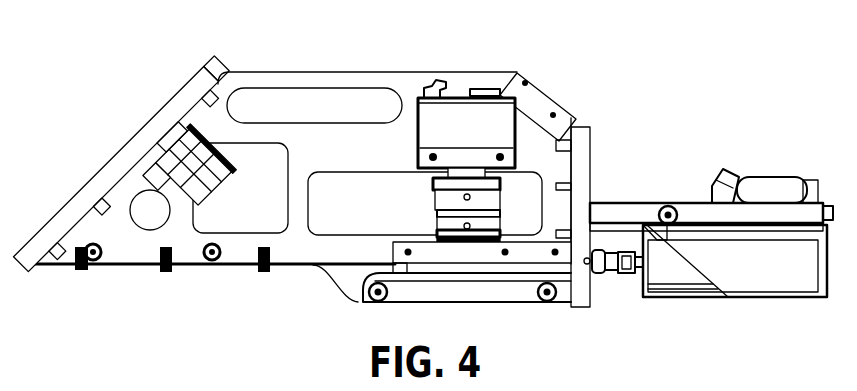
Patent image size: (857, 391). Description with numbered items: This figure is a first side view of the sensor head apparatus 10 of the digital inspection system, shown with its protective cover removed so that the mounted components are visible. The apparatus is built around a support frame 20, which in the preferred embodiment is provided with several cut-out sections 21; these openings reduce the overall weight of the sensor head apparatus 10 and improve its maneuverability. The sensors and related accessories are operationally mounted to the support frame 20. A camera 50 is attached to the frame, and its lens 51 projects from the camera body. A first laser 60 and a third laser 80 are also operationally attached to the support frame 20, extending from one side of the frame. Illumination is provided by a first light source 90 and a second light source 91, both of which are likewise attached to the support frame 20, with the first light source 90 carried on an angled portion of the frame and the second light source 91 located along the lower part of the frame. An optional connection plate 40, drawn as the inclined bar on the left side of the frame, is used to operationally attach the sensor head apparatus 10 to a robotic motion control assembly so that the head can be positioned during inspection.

The sensor head apparatus 10 is at (509, 60).
The support frame 20 is at (332, 157).
The cut-out sections 21 is at (265, 108).
The connection plate 40 is at (105, 177).
The camera 50 is at (500, 121).
The lens 51 is at (503, 187).
The first laser 60 is at (765, 193).
The third laser 80 is at (773, 277).
The first light source 90 is at (190, 157).
The second light source 91 is at (513, 293).